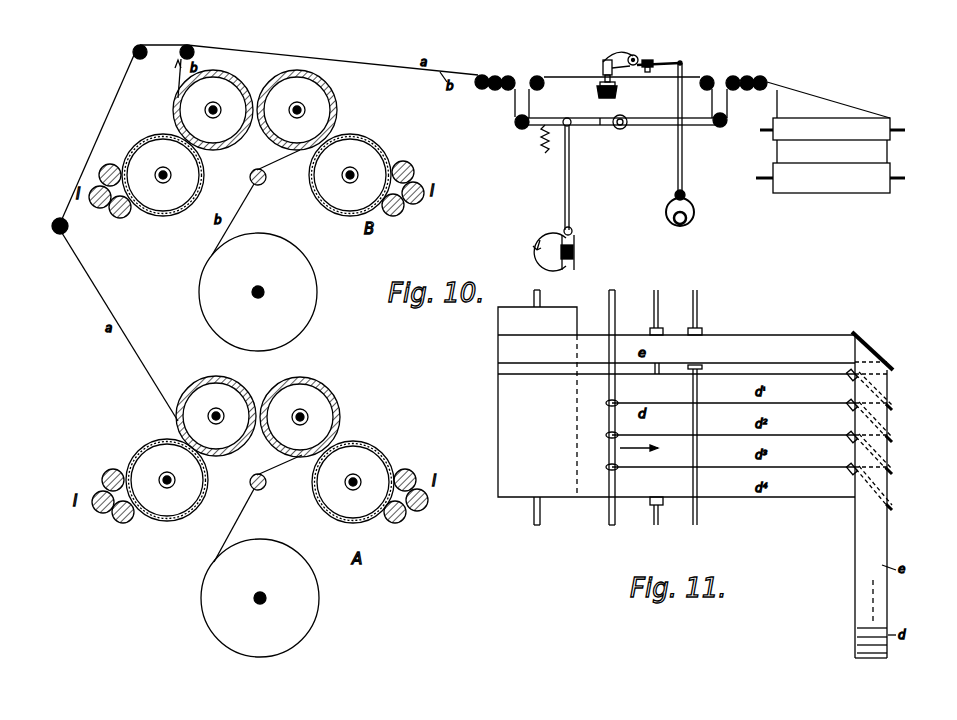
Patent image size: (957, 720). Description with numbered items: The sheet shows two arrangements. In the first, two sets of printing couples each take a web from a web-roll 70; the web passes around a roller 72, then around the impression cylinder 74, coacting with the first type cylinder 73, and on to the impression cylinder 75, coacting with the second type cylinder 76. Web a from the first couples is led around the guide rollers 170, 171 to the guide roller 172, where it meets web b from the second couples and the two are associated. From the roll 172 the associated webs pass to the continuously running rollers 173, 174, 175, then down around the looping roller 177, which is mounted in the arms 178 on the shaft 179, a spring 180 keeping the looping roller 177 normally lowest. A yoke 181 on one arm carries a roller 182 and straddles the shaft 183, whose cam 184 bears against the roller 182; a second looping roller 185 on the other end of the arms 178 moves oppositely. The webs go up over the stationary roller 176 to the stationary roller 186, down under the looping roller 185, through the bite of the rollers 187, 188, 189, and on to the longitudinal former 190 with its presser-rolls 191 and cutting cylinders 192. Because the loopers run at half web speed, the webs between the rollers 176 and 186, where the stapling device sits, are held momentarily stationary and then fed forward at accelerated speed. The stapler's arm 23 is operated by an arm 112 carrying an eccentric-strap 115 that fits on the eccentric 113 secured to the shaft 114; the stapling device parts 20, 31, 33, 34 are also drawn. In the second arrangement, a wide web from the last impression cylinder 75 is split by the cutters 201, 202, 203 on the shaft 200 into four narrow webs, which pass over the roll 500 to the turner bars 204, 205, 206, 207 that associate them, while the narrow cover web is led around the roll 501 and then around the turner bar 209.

In FIG. 10, the web-roll 70 is at (300, 265).
In FIG. 10, the roller 72 is at (266, 179).
In FIG. 10, the first type cylinder 73 is at (351, 328).
In FIG. 10, the impression cylinder 74 is at (298, 263).
In FIG. 10, the impression cylinder 75 is at (214, 263).
In FIG. 11, the impression cylinder 75 is at (676, 407).
In FIG. 10, the second type cylinder 76 is at (165, 327).
In FIG. 10, the guide roller 170 is at (68, 226).
In FIG. 10, the guide roller 171 is at (140, 59).
In FIG. 10, the guide roller 172 is at (191, 47).
In FIG. 10, the continuously running roller 173 is at (478, 74).
In FIG. 10, the continuously running roller 174 is at (495, 75).
In FIG. 10, the continuously running roller 175 is at (511, 76).
In FIG. 10, the stationary roller 176 is at (541, 77).
In FIG. 10, the looping roller 177 is at (514, 122).
In FIG. 10, the arms 178 is at (600, 128).
In FIG. 10, the shaft 179 is at (625, 115).
In FIG. 10, the spring 180 is at (545, 141).
In FIG. 10, the yoke 181 is at (569, 193).
In FIG. 10, the roller 182 is at (573, 229).
In FIG. 10, the shaft 183 is at (575, 252).
In FIG. 10, the cam 184 is at (551, 232).
In FIG. 10, the looping roller 185 is at (727, 124).
In FIG. 10, the stationary roller 186 is at (707, 75).
In FIG. 10, the continuously running roller 187 is at (733, 75).
In FIG. 10, the continuously running roller 188 is at (747, 90).
In FIG. 10, the continuously running roller 189 is at (765, 78).
In FIG. 10, the longitudinal former 190 is at (836, 99).
In FIG. 10, the presser-rolls 191 is at (832, 129).
In FIG. 10, the cutting cylinders 192 is at (830, 178).
In FIG. 10, the arm 112 is at (683, 152).
In FIG. 10, the eccentric 113 is at (694, 212).
In FIG. 10, the shaft 114 is at (686, 222).
In FIG. 10, the eccentric-strap 115 is at (686, 195).
In FIG. 10, the block 20 is at (647, 60).
In FIG. 10, the arm 23 is at (668, 63).
In FIG. 10, the clamp block 31 is at (597, 93).
In FIG. 10, the lever 33 is at (622, 54).
In FIG. 10, the upright 34 is at (603, 67).
In FIG. 11, the shaft 200 is at (609, 306).
In FIG. 11, the cutter 201 is at (606, 404).
In FIG. 11, the cutter 202 is at (606, 436).
In FIG. 11, the cutter 203 is at (606, 468).
In FIG. 11, the turner bar 204 is at (892, 410).
In FIG. 11, the turner bar 205 is at (892, 442).
In FIG. 11, the turner bar 206 is at (892, 474).
In FIG. 11, the turner bar 207 is at (892, 510).
In FIG. 11, the turner bar 209 is at (860, 330).
In FIG. 11, the roll 500 is at (663, 330).
In FIG. 11, the roll 501 is at (702, 330).